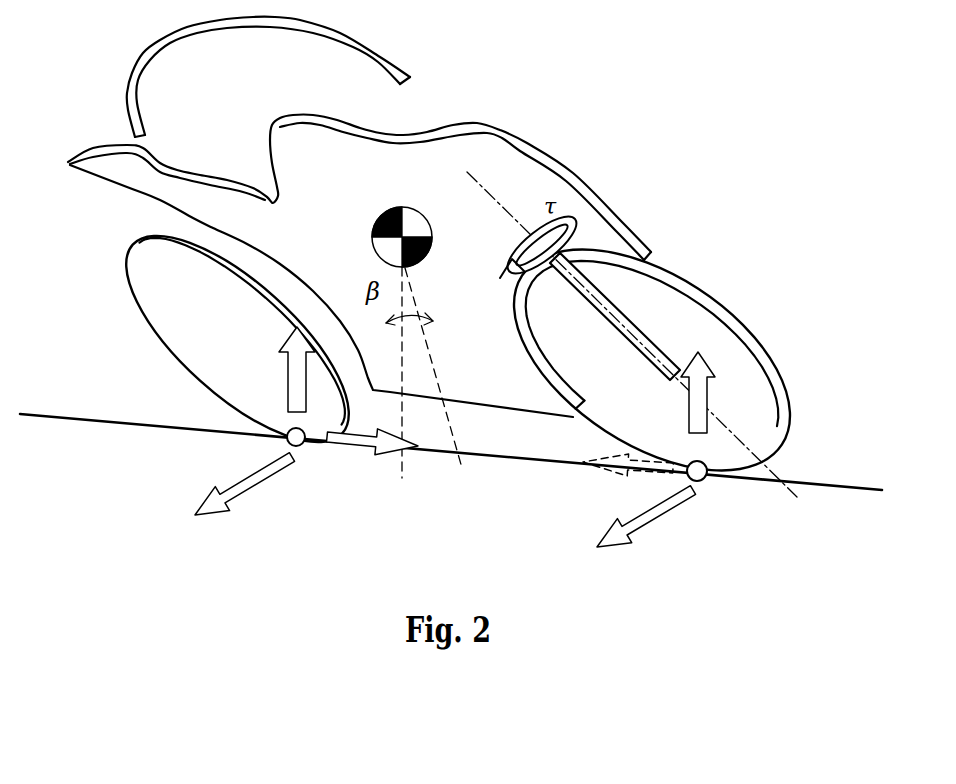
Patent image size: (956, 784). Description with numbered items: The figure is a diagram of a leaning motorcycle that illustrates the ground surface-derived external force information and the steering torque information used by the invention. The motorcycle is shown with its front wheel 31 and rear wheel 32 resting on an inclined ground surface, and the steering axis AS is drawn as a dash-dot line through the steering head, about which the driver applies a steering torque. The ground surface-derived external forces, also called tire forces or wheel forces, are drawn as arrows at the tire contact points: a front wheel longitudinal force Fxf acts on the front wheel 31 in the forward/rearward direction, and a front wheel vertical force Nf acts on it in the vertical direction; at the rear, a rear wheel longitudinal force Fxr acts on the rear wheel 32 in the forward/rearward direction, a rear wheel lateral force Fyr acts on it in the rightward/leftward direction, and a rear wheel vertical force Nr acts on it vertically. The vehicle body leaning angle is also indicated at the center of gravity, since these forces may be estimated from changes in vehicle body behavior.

The front wheel 31 is at (770, 363).
The rear wheel 32 is at (128, 266).
The steering axis AS is at (497, 193).
The rear wheel vertical force Nr is at (285, 369).
The front wheel vertical force Nf is at (712, 392).
The rear wheel longitudinal force Fxr is at (387, 456).
The rear wheel lateral force Fyr is at (245, 503).
The front wheel longitudinal force Fxf is at (606, 472).